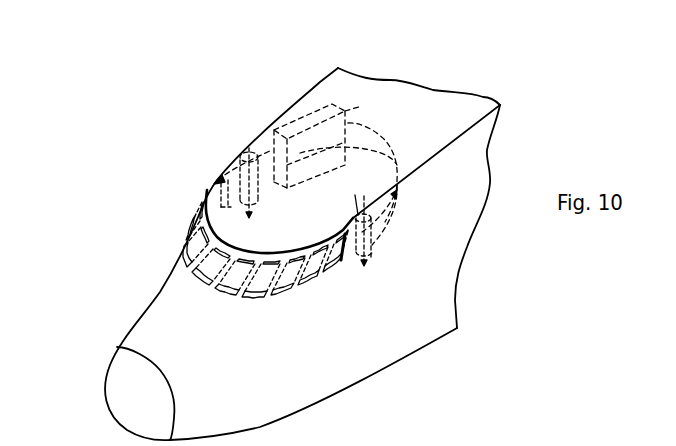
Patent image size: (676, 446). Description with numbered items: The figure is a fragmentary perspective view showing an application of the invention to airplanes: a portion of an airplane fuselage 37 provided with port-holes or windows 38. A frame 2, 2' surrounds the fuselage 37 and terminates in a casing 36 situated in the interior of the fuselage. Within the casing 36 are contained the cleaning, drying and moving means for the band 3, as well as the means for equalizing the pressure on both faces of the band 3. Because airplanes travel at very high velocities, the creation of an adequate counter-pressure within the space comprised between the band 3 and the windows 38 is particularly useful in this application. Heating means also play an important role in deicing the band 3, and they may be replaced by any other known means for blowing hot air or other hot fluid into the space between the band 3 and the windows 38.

The frame 2 is at (260, 255).
The frame 2' is at (235, 307).
The band 3 is at (364, 126).
The casing 36 is at (308, 122).
The fuselage 37 is at (163, 323).
The windows 38 is at (265, 278).